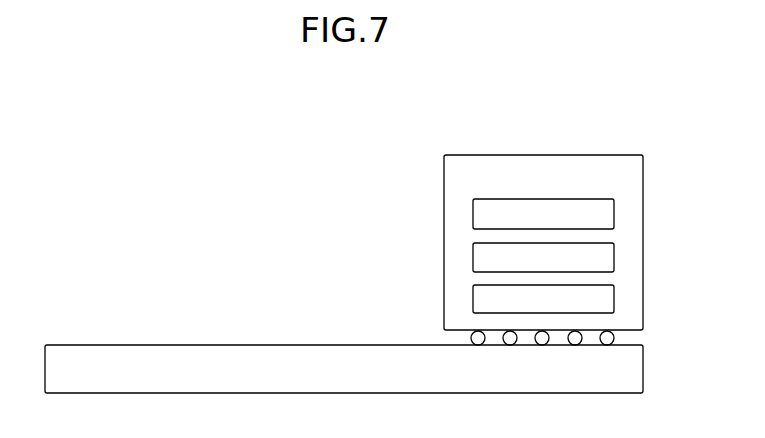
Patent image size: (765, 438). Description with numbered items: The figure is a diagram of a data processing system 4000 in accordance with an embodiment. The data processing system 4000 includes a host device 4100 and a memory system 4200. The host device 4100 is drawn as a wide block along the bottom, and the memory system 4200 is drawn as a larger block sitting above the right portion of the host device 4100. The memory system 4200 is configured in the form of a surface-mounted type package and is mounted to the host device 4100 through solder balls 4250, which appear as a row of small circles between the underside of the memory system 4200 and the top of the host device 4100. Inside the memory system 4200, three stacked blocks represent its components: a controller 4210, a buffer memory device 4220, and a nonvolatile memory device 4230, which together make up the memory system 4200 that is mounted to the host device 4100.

The data processing system 4000 is at (125, 128).
The host device 4100 is at (344, 369).
The memory system 4200 is at (543, 242).
The controller 4210 is at (543, 214).
The buffer memory device 4220 is at (543, 257).
The nonvolatile memory device 4230 is at (543, 299).
The solder balls 4250 is at (625, 339).